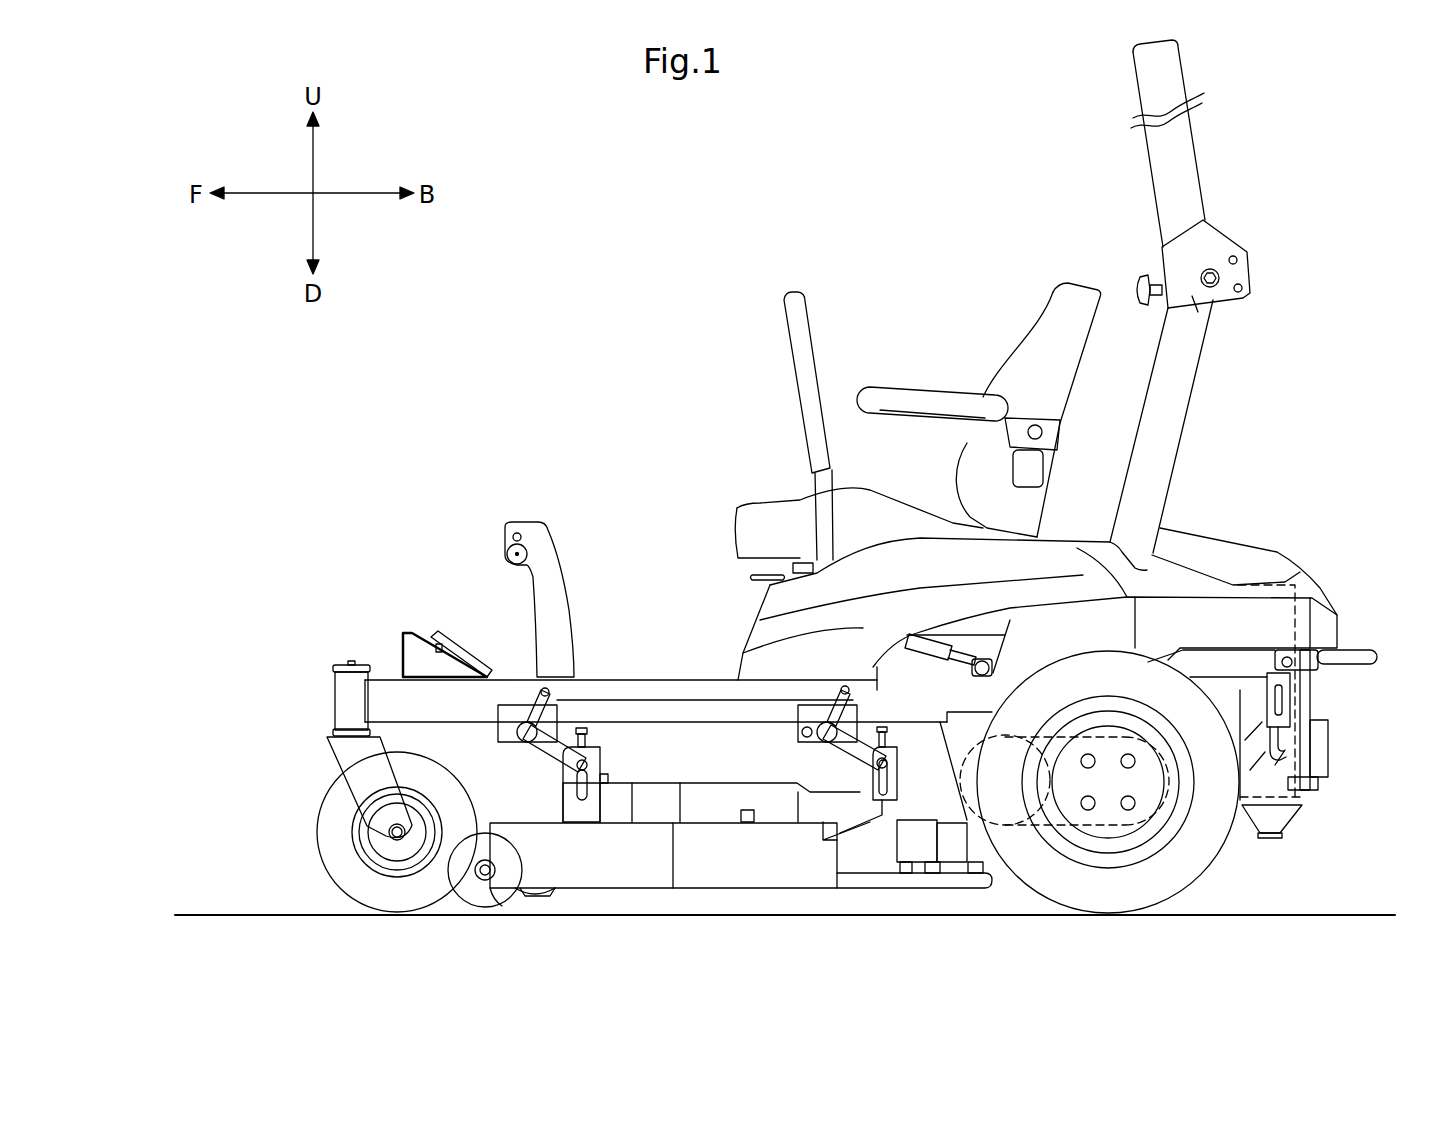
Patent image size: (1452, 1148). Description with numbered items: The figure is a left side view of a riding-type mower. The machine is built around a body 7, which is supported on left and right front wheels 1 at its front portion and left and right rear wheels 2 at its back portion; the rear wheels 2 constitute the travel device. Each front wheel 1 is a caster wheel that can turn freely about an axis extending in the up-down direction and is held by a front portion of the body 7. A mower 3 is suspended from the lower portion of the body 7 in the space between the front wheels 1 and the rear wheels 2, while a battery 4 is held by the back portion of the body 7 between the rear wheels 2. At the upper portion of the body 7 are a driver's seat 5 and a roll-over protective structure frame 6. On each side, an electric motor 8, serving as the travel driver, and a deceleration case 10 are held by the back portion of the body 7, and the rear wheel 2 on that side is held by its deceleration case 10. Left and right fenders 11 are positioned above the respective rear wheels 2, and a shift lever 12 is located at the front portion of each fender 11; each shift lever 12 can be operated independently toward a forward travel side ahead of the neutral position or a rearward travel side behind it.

The front wheel 1 is at (325, 832).
The rear wheel 2 is at (1203, 847).
The mower 3 is at (718, 870).
The battery 4 is at (1300, 758).
The driver's seat 5 is at (1013, 363).
The roll-over protective structure (ROPS) frame 6 is at (1180, 175).
The body 7 is at (512, 692).
The electric motor 8 is at (1010, 742).
The deceleration case 10 is at (1097, 827).
The fender 11 is at (745, 610).
The shift lever 12 is at (792, 294).